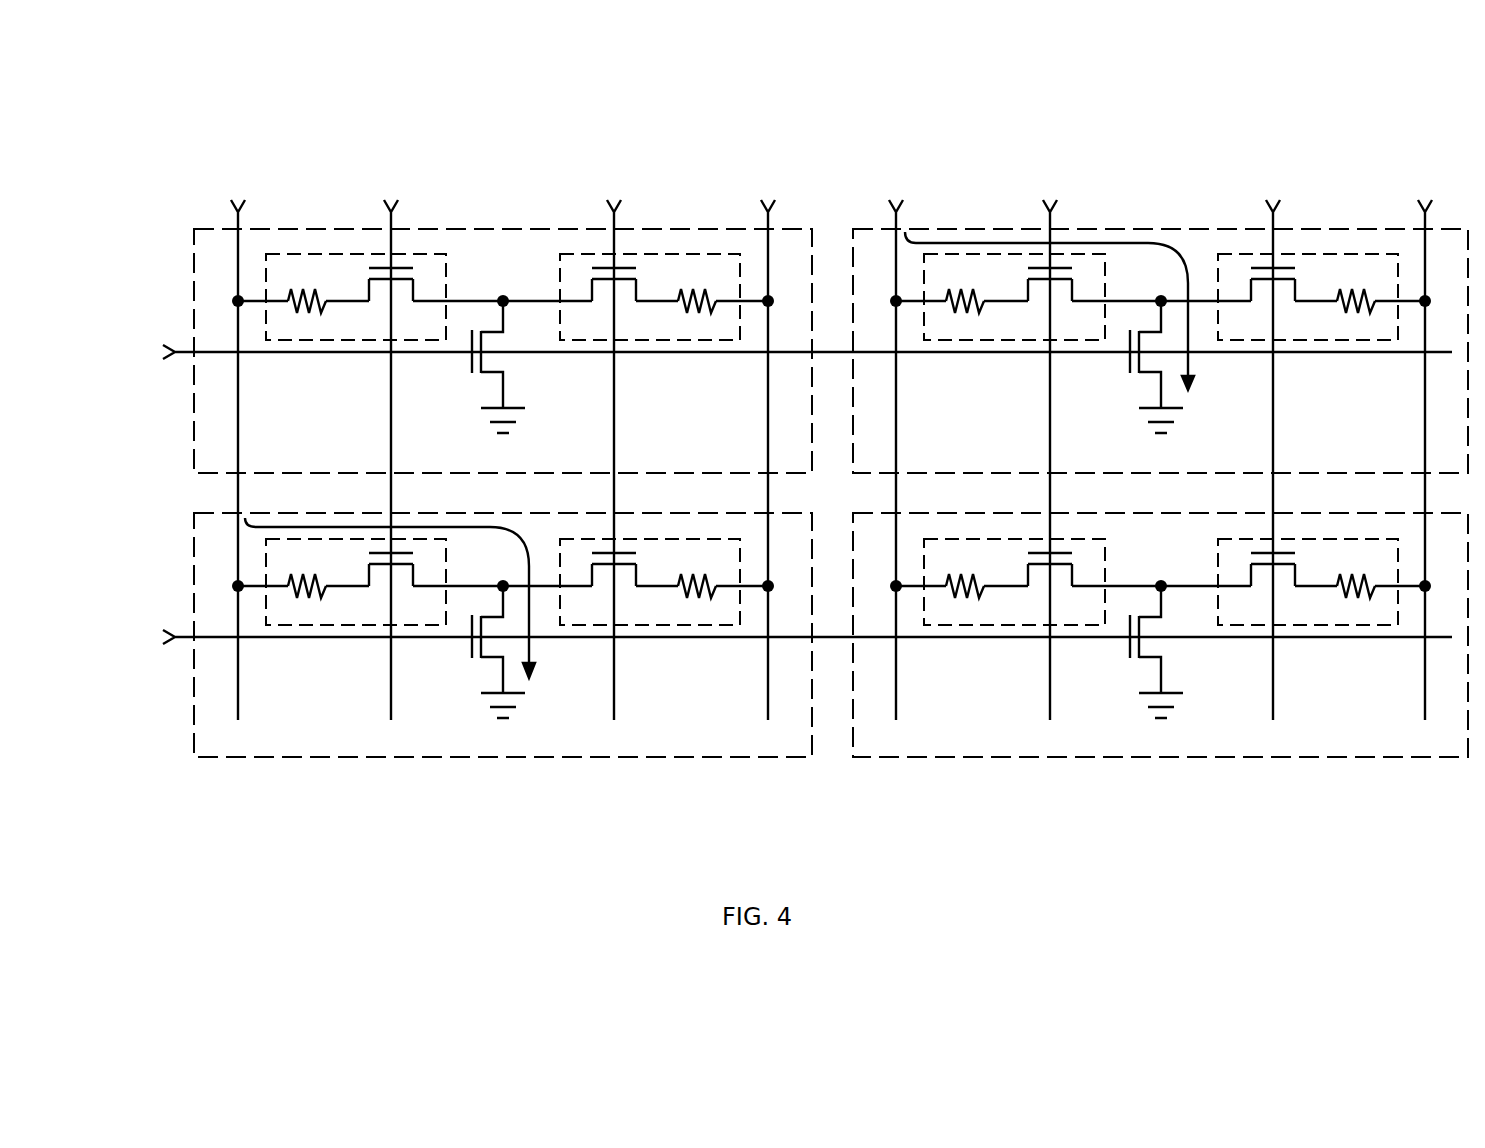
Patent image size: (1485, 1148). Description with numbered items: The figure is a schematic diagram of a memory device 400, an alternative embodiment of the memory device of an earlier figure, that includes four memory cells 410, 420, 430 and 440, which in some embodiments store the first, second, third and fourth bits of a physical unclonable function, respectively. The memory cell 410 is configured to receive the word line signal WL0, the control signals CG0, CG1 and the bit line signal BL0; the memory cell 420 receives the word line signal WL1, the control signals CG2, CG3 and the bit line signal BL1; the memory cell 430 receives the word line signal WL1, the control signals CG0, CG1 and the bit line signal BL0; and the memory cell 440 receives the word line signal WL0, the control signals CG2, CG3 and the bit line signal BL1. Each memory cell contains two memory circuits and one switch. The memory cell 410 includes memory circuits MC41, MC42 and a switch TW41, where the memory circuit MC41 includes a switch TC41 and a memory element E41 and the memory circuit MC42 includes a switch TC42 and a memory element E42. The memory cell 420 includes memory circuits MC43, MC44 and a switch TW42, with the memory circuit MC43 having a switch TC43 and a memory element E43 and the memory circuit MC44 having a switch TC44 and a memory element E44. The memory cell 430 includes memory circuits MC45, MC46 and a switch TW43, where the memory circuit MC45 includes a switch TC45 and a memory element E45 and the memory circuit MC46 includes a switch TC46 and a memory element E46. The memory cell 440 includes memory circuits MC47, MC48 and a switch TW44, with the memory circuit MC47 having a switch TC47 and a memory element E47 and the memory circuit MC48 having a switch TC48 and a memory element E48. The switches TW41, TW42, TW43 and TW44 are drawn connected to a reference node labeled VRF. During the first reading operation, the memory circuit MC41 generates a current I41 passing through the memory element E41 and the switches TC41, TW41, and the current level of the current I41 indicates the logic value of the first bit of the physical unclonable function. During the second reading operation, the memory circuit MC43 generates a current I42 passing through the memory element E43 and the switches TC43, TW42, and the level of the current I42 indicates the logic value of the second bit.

The memory device 400 is at (157, 103).
The memory cell 410 is at (297, 758).
The memory cell 420 is at (1179, 229).
The memory cell 430 is at (520, 229).
The memory cell 440 is at (953, 758).
The memory circuit MC41 is at (333, 625).
The memory circuit MC42 is at (661, 625).
The memory circuit MC43 is at (992, 340).
The memory circuit MC44 is at (1320, 340).
The memory circuit MC45 is at (333, 340).
The memory circuit MC46 is at (661, 340).
The memory circuit MC47 is at (992, 625).
The memory circuit MC48 is at (1320, 625).
The memory element E41 is at (308, 569).
The memory element E42 is at (698, 569).
The memory element E43 is at (966, 284).
The memory element E44 is at (1357, 284).
The memory element E45 is at (308, 284).
The memory element E46 is at (698, 284).
The memory element E47 is at (966, 569).
The memory element E48 is at (1357, 569).
The switch TC41 is at (388, 585).
The switch TC42 is at (612, 585).
The switch TC43 is at (1047, 300).
The switch TC44 is at (1271, 300).
The switch TC45 is at (388, 300).
The switch TC46 is at (612, 300).
The switch TC47 is at (1047, 585).
The switch TC48 is at (1271, 585).
The switch TW41 is at (467, 639).
The switch TW42 is at (1125, 354).
The switch TW43 is at (467, 354).
The switch TW44 is at (1125, 639).
The current I41 is at (520, 542).
The current I42 is at (968, 243).
The bit line signal BL0 is at (502, 444).
The bit line signal BL1 is at (1160, 444).
The control signal CG0 is at (391, 444).
The control signal CG1 is at (614, 444).
The control signal CG2 is at (1050, 444).
The control signal CG3 is at (1273, 444).
The word line signal WL0 is at (779, 637).
The word line signal WL1 is at (779, 352).
The reference voltage VRF is at (832, 578).